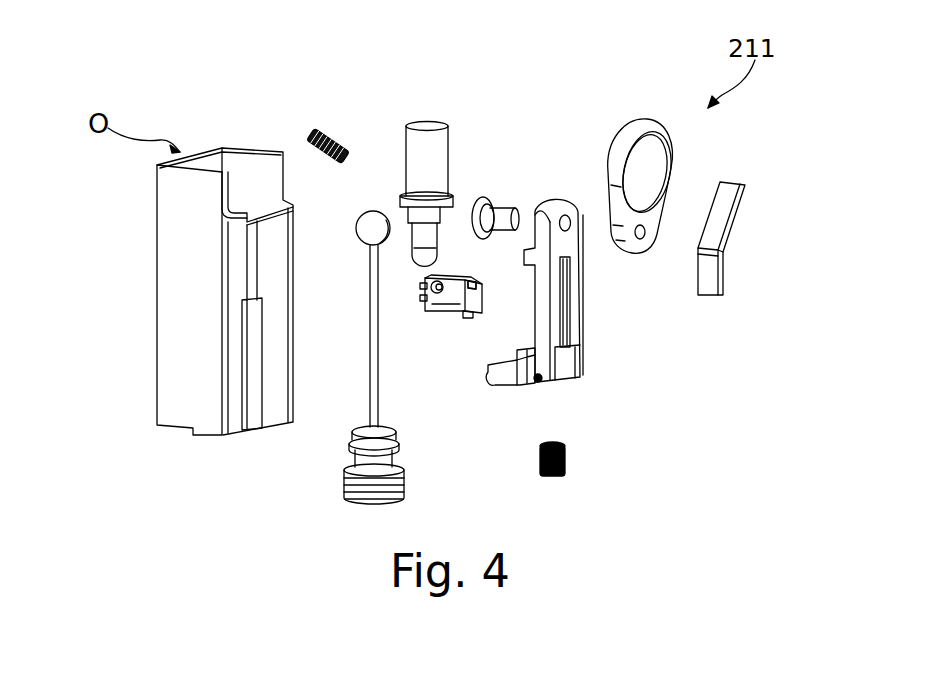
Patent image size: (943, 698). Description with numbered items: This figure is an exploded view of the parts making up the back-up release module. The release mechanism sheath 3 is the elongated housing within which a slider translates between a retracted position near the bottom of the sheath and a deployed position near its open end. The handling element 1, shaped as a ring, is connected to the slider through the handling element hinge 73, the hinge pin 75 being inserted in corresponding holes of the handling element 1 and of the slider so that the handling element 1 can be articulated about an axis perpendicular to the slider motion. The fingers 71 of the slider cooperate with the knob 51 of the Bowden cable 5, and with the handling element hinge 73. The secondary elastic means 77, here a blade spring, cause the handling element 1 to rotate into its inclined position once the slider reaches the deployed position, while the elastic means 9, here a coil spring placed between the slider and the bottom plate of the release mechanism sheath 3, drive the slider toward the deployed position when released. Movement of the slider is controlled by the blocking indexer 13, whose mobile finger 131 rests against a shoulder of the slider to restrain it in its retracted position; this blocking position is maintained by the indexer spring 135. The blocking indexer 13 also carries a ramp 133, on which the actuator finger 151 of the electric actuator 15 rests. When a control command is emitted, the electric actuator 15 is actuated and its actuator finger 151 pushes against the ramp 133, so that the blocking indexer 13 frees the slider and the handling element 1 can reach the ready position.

The handling element 1 is at (629, 120).
The release mechanism sheath 3 is at (157, 262).
The Bowden cable 5 is at (345, 487).
The elastic means 9 is at (567, 460).
The blocking indexer 13 is at (467, 318).
The electric actuator 15 is at (405, 132).
The knob 51 is at (377, 227).
The fingers 71 is at (493, 382).
The handling element hinge 73 is at (596, 197).
The hinge pin 75 is at (507, 205).
The secondary elastic means 77 is at (705, 295).
The mobile finger 131 is at (432, 312).
The ramp 133 is at (472, 283).
The indexer spring 135 is at (313, 136).
The actuator finger 151 is at (415, 266).